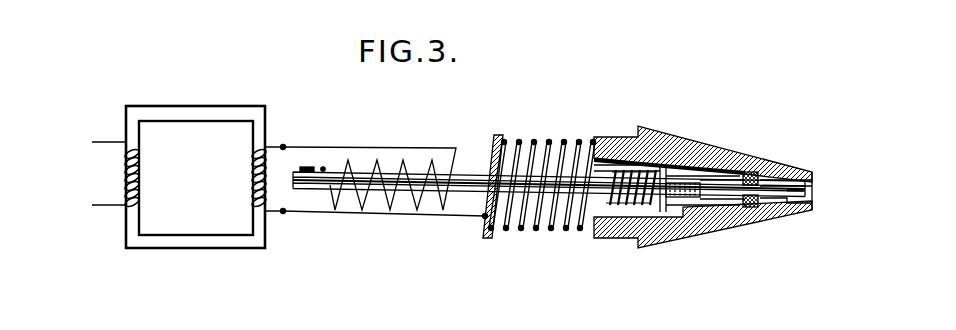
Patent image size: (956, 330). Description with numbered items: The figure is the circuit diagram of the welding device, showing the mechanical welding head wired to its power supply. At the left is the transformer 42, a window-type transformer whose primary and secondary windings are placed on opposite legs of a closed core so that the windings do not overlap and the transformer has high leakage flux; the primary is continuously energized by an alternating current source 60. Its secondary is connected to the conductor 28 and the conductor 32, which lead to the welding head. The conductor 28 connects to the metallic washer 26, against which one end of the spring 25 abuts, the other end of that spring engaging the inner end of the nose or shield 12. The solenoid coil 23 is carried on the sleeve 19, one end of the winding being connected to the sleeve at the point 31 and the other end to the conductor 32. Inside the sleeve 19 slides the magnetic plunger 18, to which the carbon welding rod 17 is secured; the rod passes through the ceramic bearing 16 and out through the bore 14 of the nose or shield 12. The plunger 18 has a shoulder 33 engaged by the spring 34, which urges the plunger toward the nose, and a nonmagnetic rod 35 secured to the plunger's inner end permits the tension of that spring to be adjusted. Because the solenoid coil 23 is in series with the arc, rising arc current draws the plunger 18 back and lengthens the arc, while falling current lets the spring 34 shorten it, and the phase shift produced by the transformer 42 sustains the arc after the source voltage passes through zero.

The nose or shield 12 is at (703, 148).
The bore 14 is at (792, 207).
The bearing 16 is at (750, 208).
The carbon welding rod 17 is at (780, 185).
The magnetic plunger 18 is at (468, 178).
The sleeve 19 is at (306, 167).
The solenoid coil 23 is at (362, 200).
The spring 25 is at (530, 140).
The metallic washer 26 is at (488, 238).
The conductor 28 is at (324, 192).
The coil winding connection to sleeve 31 is at (324, 168).
The conductor 32 is at (366, 148).
The shoulder 33 is at (672, 238).
The spring 34 is at (640, 205).
The nonmagnetic rod 35 is at (320, 190).
The transformer 42 is at (195, 250).
The AC source winding 60 is at (114, 177).